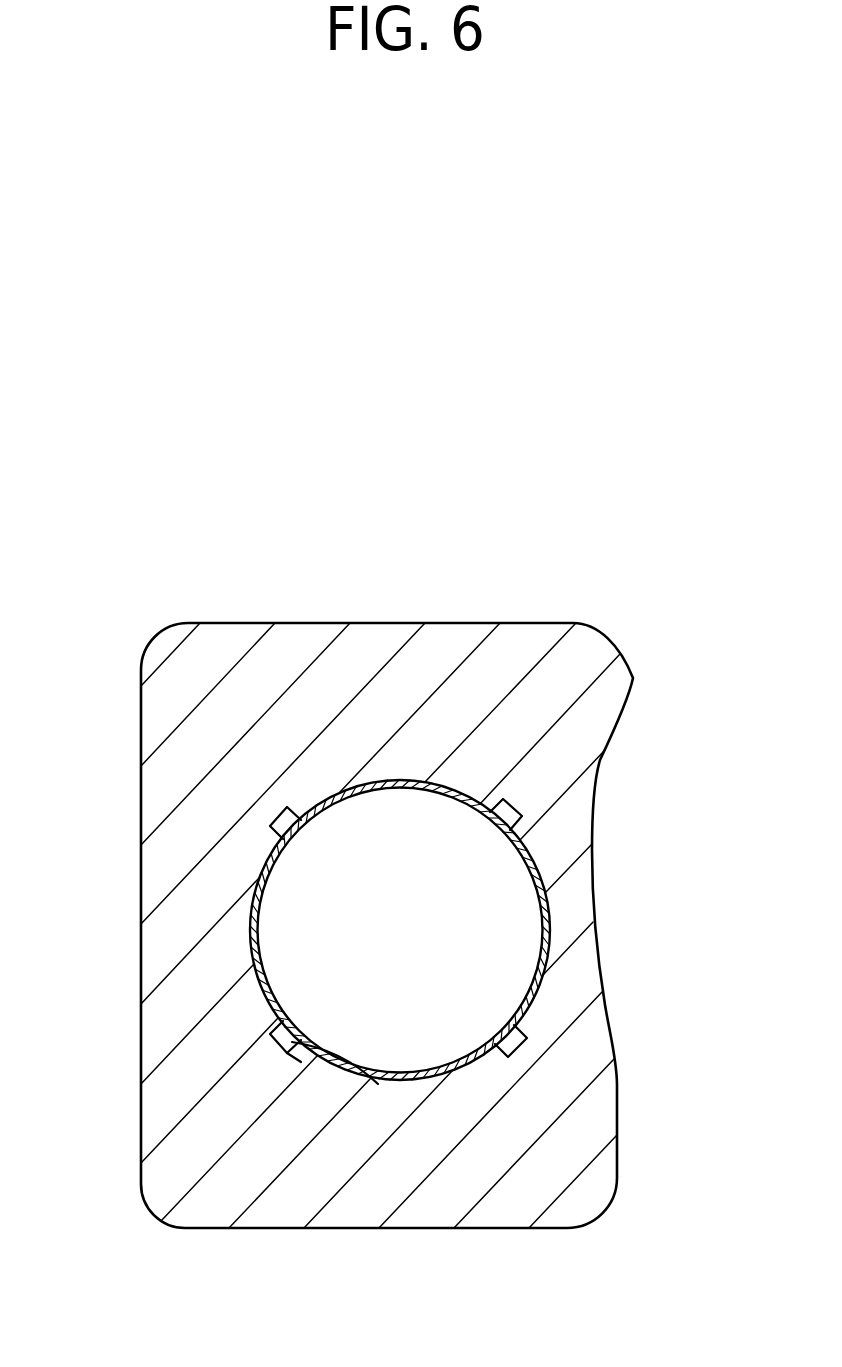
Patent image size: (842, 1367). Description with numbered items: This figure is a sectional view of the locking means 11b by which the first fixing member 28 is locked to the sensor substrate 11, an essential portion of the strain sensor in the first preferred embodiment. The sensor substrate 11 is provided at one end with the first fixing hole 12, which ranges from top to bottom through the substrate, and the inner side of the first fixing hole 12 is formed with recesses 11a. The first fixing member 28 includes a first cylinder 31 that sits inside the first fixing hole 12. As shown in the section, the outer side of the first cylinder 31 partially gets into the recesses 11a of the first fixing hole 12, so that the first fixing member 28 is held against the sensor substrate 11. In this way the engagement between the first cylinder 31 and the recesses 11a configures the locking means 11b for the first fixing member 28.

The sensor substrate 11 is at (508, 690).
The recess 11a is at (297, 1058).
The locking means 11b is at (271, 1035).
The first fixing hole 12 is at (552, 930).
The first fixing member 28 is at (397, 781).
The first cylinder 31 is at (367, 1079).